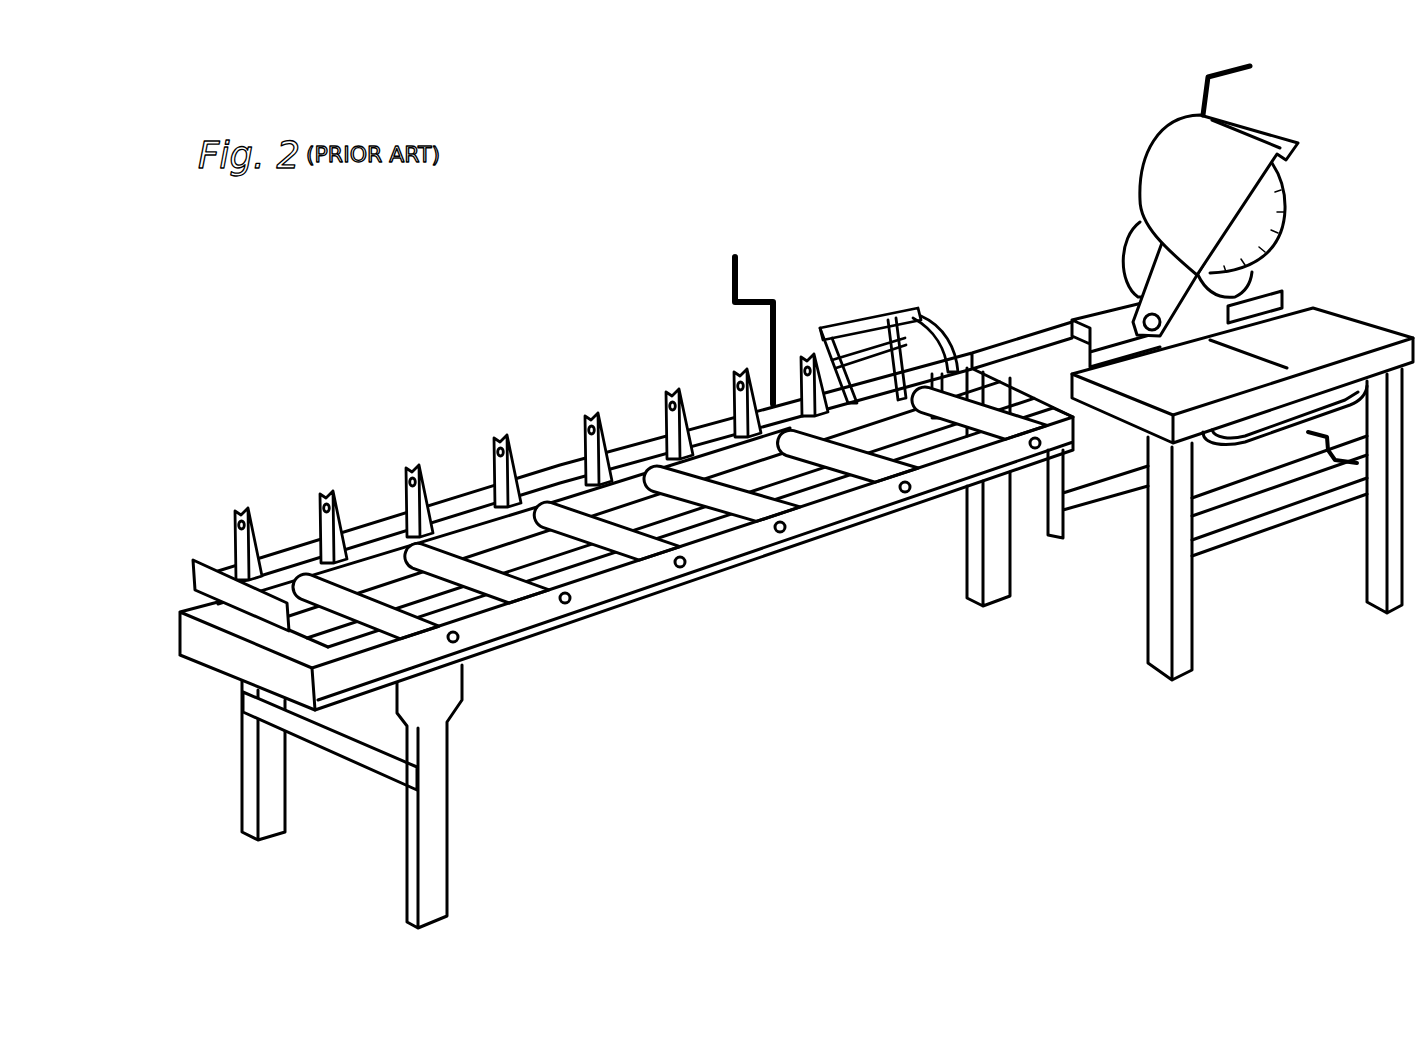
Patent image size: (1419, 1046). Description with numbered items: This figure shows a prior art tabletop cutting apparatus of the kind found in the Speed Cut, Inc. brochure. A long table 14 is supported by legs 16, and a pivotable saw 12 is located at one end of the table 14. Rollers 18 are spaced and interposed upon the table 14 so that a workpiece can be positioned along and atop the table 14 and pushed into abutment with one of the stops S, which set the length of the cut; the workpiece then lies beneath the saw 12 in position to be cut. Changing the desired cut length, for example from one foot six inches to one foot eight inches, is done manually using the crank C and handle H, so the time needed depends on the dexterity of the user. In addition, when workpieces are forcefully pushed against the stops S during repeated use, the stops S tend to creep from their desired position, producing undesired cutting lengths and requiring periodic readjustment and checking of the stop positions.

The pivotable saw 12 is at (1165, 126).
The table 14 is at (942, 474).
The legs 16 is at (1167, 477).
The rollers 18 is at (515, 570).
The stops S is at (510, 500).
The crank C is at (739, 287).
The handle H is at (895, 312).